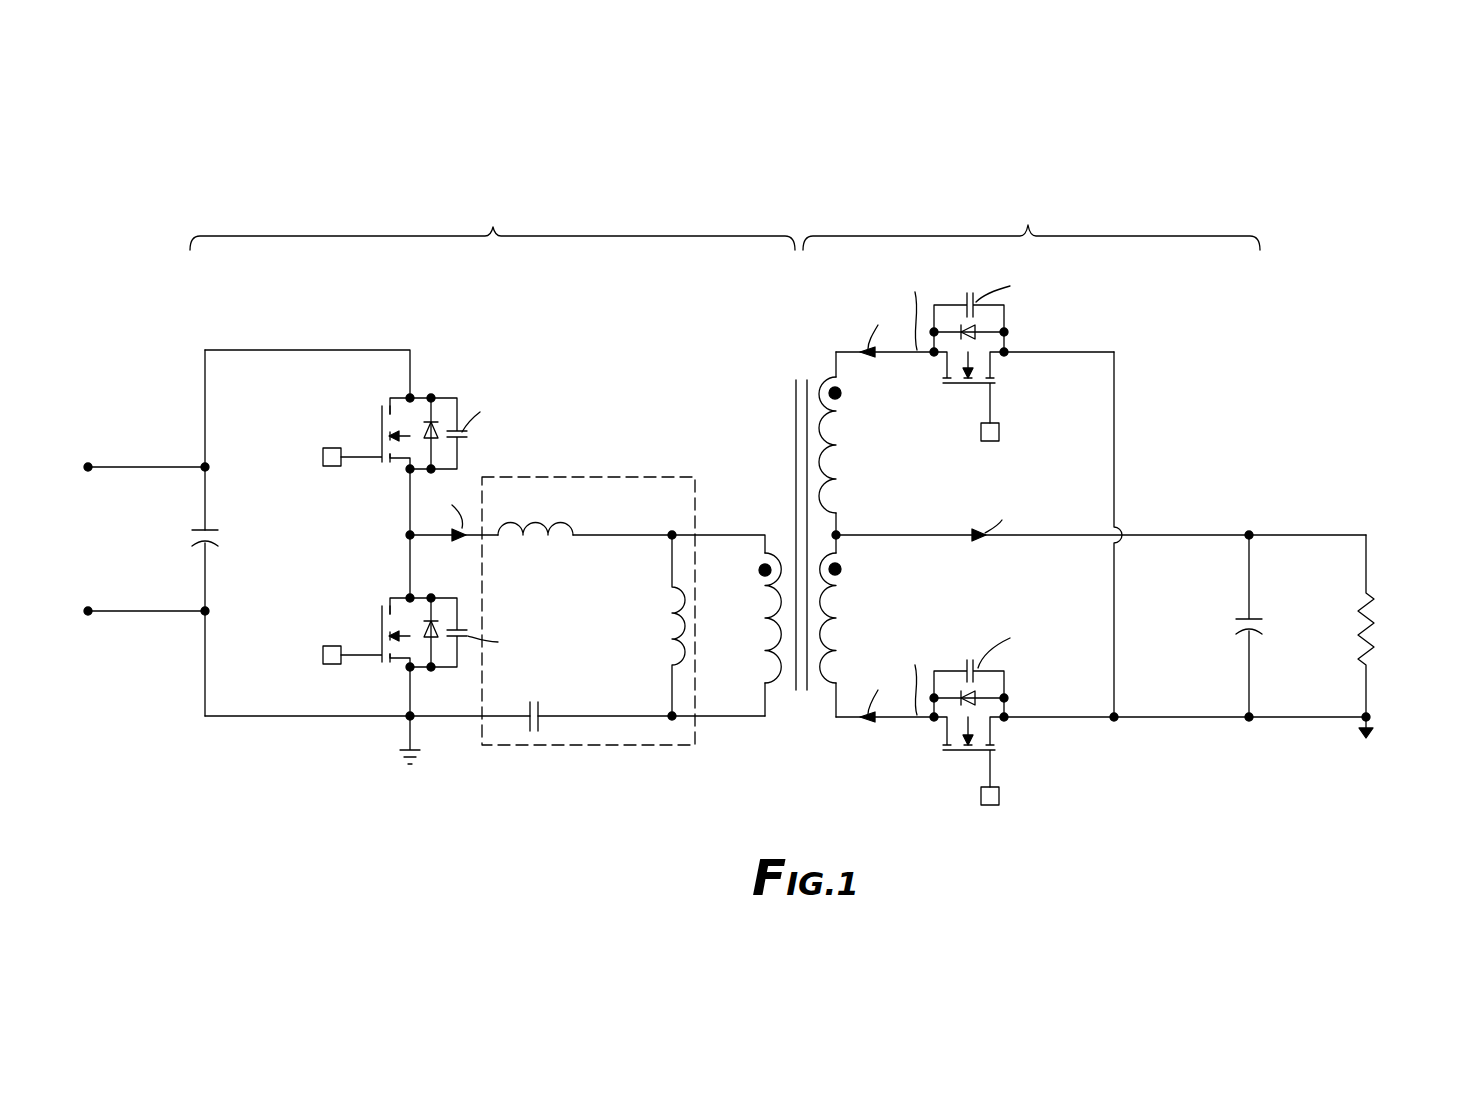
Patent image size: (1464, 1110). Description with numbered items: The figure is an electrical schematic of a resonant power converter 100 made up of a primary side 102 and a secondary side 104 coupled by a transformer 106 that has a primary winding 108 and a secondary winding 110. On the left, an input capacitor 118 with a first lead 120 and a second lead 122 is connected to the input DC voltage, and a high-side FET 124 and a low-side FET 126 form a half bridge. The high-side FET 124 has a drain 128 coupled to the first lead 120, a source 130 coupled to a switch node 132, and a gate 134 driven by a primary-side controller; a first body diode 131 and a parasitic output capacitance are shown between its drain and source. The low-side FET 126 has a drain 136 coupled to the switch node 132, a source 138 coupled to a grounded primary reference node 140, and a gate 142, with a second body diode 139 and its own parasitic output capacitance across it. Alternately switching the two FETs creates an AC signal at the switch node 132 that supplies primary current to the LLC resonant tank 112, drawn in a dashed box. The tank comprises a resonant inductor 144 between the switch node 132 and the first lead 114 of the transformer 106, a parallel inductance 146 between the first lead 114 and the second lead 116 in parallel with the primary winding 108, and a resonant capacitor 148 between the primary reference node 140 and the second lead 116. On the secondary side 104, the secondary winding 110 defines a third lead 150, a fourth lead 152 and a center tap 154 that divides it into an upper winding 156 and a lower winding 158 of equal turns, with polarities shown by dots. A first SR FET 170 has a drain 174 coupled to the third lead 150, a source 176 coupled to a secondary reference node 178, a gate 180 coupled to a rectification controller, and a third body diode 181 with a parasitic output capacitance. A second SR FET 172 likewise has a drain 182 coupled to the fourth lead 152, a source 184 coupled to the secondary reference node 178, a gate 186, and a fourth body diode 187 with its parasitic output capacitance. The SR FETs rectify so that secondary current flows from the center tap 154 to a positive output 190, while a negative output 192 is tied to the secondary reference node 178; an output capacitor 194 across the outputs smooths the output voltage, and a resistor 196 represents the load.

The resonant power converter 100 is at (195, 191).
The primary side 102 is at (493, 226).
The secondary side 104 is at (1028, 224).
The transformer 106 is at (775, 376).
The primary winding 108 is at (777, 552).
The secondary winding 110 is at (833, 377).
The LLC resonant tank 112 is at (590, 477).
The first lead 114 is at (756, 527).
The second lead 116 is at (768, 700).
The input capacitor 118 is at (222, 524).
The first lead 120 is at (204, 527).
The second lead 122 is at (203, 549).
The high-side FET 124 is at (378, 403).
The low-side FET 126 is at (355, 606).
The drain 128 is at (392, 404).
The source 130 is at (398, 463).
The first body diode 131 is at (462, 438).
The switch node 132 is at (405, 535).
The gate 134 is at (356, 450).
The drain 136 is at (388, 605).
The source 138 is at (395, 668).
The second body diode 139 is at (441, 621).
The primary reference node 140 is at (406, 719).
The gate 142 is at (352, 648).
The resonant inductor 144 is at (544, 530).
The parallel inductance 146 is at (668, 600).
The resonant capacitor 148 is at (546, 702).
The third lead 150 is at (838, 700).
The fourth lead 152 is at (838, 350).
The center tap 154 is at (840, 529).
The upper winding 156 is at (843, 447).
The lower winding 158 is at (842, 606).
The first SR FET 170 is at (958, 768).
The second SR FET 172 is at (1010, 384).
The drain 174 is at (940, 732).
The source 176 is at (996, 731).
The secondary reference node 178 is at (1118, 714).
The gate 180 is at (1000, 796).
The third body diode 181 is at (985, 691).
The drain 182 is at (934, 360).
The source 184 is at (1000, 362).
The gate 186 is at (985, 395).
The fourth body diode 187 is at (976, 329).
The positive output 190 is at (1251, 530).
The negative output 192 is at (1252, 712).
The output capacitor 194 is at (1256, 615).
The resistor 196 is at (1376, 631).